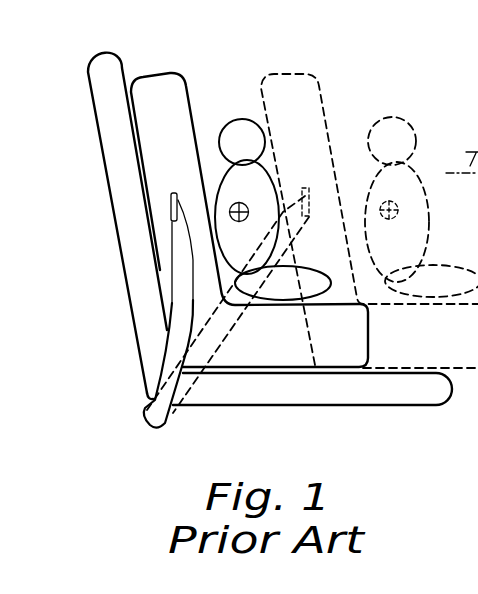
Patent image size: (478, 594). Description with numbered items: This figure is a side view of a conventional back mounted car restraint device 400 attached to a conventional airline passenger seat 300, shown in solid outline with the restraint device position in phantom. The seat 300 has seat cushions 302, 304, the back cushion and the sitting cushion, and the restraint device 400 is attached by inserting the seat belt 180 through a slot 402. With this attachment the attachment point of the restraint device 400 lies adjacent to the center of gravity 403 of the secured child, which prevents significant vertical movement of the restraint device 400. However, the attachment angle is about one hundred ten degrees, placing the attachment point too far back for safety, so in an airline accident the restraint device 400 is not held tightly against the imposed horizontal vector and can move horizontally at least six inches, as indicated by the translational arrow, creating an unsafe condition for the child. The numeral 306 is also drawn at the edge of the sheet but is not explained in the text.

The airline passenger seat 300 is at (130, 382).
The seat cushion 302 is at (108, 80).
The seat cushion 304 is at (283, 397).
The seat belt 180 is at (175, 390).
The car restraint device 400 is at (330, 88).
The slot 402 is at (173, 193).
The center of gravity 403 is at (237, 222).
The seat component (partially visible) 306 is at (465, 427).